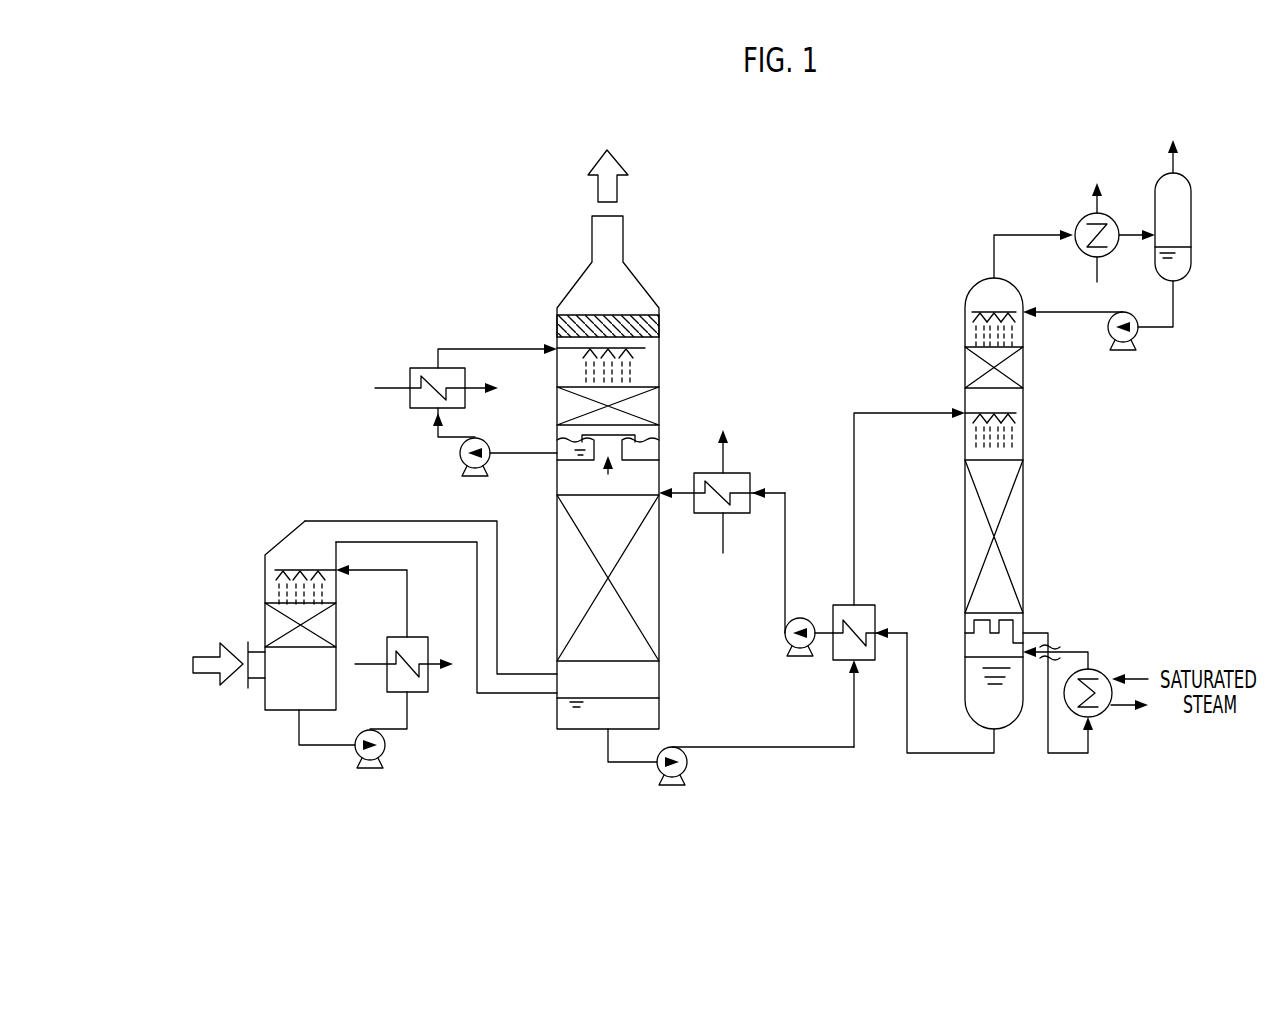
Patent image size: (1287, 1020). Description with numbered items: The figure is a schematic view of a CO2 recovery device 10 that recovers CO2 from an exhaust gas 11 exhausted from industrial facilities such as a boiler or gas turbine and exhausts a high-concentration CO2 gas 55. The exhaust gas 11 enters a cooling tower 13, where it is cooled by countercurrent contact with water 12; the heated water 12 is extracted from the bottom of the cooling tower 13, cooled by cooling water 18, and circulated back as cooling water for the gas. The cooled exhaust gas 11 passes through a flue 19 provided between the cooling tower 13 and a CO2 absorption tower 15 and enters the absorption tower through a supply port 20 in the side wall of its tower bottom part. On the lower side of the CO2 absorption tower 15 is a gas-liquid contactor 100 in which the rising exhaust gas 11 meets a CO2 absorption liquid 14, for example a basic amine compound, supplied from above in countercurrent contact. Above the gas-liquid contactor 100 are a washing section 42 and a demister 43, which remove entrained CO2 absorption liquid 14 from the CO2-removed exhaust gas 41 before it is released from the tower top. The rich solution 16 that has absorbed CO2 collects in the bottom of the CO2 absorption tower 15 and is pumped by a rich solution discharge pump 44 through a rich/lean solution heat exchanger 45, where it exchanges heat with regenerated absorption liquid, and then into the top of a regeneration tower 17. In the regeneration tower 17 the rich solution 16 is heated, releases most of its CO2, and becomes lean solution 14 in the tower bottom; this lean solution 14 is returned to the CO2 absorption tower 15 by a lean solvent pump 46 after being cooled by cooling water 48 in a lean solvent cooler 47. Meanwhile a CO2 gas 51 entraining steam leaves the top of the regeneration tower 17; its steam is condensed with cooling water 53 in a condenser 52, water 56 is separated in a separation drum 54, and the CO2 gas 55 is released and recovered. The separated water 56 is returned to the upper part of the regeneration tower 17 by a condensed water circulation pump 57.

The CO2 recovery device 10 is at (440, 183).
The exhaust gas 11 is at (202, 652).
The water 12 is at (408, 612).
The cooling tower 13 is at (278, 540).
The CO2 absorption liquid 14 is at (890, 777).
The CO2 absorption tower 15 is at (553, 292).
The rich solution 16 is at (938, 405).
The regeneration tower 17 is at (958, 290).
The cooling water 18 is at (400, 664).
The flue 19 is at (371, 521).
The supply port 20 is at (557, 684).
The CO2-removed exhaust gas 41 is at (612, 475).
The washing section 42 is at (557, 409).
The demister 43 is at (557, 327).
The rich solution discharge pump 44 is at (688, 768).
The rich/lean solution heat exchanger 45 is at (862, 605).
The lean solvent pump 46 is at (798, 612).
The lean solvent cooler 47 is at (738, 472).
The cooling water 48 is at (722, 551).
The CO2 gas 51 is at (1022, 234).
The condenser 52 is at (1083, 214).
The cooling water 53 is at (1097, 296).
The separation drum 54 is at (1191, 222).
The CO2 gas 55 is at (1176, 165).
The water 56 is at (1058, 311).
The condensed water circulation pump 57 is at (1108, 322).
The gas-liquid contactor 100 is at (541, 502).